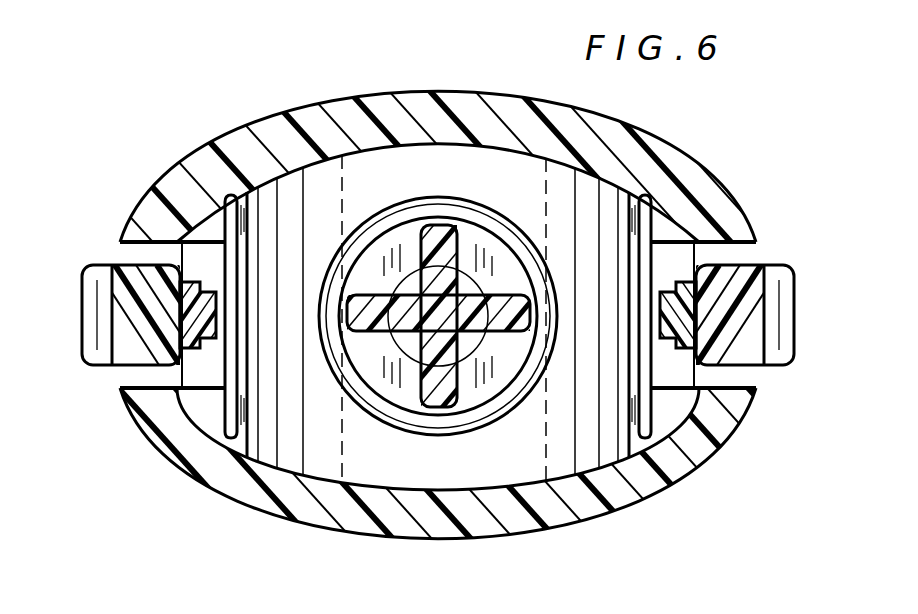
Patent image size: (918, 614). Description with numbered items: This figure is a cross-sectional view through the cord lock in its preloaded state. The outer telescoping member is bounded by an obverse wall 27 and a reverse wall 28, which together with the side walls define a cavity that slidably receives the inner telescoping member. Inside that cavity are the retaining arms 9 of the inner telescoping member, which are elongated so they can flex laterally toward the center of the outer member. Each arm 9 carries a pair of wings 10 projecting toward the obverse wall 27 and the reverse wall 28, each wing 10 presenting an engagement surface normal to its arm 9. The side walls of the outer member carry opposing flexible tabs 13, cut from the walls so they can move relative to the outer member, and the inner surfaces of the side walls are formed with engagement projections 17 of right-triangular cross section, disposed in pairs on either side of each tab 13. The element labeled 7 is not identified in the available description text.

The central cross-shaped rotary member 7 is at (454, 218).
The arms 9 is at (198, 327).
The wings 10 is at (231, 194).
The tabs 13 is at (100, 307).
The engagement projections 17 is at (166, 197).
The obverse wall 27 is at (431, 528).
The reverse wall 28 is at (346, 124).